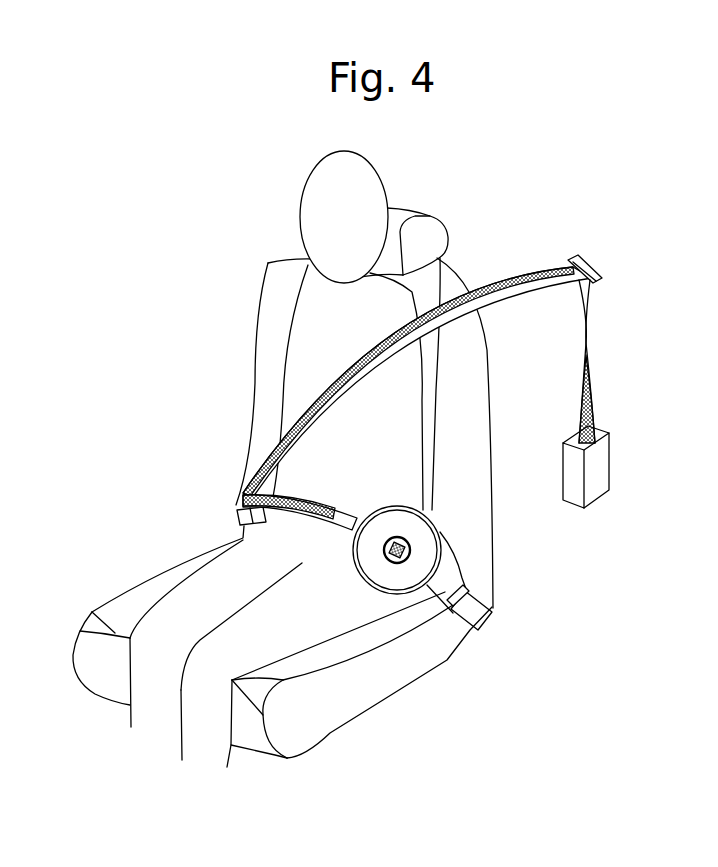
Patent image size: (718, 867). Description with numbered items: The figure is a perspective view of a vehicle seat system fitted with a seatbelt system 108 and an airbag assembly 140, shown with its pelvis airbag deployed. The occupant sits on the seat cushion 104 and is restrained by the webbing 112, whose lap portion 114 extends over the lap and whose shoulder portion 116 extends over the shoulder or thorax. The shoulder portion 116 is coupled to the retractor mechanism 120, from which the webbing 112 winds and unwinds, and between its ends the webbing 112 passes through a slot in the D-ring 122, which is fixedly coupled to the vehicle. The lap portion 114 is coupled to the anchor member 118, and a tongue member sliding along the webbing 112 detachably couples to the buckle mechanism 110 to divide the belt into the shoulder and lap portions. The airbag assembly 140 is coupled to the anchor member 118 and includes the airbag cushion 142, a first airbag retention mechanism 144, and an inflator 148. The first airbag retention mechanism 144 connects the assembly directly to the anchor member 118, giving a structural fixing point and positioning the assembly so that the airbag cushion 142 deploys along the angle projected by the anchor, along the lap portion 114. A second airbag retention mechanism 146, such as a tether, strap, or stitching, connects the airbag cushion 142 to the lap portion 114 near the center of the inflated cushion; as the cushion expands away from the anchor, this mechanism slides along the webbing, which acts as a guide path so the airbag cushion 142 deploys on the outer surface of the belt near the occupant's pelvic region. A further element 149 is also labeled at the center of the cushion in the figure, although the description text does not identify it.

The seat cushion 104 is at (127, 607).
The seatbelt system 108 is at (234, 402).
The buckle mechanism 110 is at (236, 512).
The webbing 112 is at (597, 380).
The lap portion of the webbing 114 is at (352, 516).
The shoulder portion of the webbing 116 is at (373, 352).
The anchor member 118 is at (479, 622).
The retractor mechanism 120 is at (606, 467).
The D-ring 122 is at (590, 263).
The airbag assembly 140 is at (495, 610).
The airbag cushion 142 is at (430, 545).
The first airbag retention mechanism 144 is at (465, 633).
The second airbag retention mechanism 146 is at (397, 563).
The inflator 148 is at (467, 598).
The sensor 149 is at (389, 557).